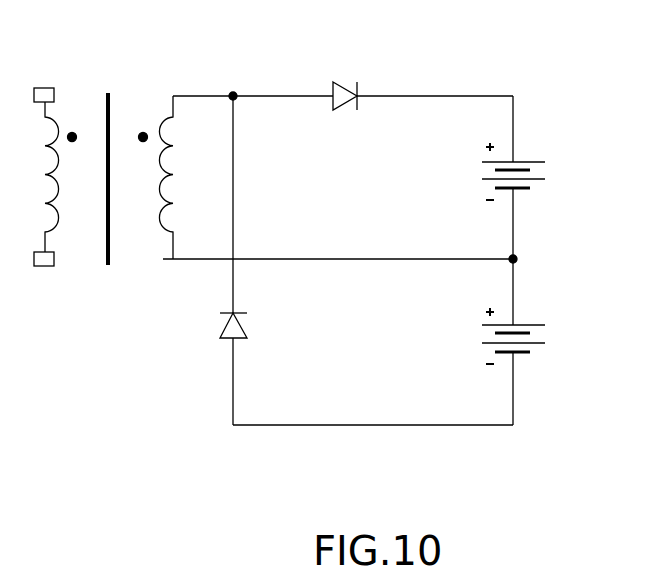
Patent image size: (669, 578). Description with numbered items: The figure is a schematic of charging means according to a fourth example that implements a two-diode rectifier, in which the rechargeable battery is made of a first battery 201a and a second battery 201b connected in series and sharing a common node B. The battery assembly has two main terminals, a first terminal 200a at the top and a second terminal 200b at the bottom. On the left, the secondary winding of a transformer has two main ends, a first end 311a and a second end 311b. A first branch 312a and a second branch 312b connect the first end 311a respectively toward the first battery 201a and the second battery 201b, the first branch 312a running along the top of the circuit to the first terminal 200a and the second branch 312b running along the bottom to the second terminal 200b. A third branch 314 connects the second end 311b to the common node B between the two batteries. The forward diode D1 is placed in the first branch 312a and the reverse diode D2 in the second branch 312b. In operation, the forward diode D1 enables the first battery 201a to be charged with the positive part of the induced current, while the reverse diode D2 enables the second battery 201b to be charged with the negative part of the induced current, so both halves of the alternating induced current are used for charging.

The first end 311a is at (172, 95).
The second end 311b is at (165, 259).
The first branch 312a is at (267, 95).
The second branch 312b is at (378, 425).
The third branch 314 is at (360, 259).
The forward diode D1 is at (343, 92).
The reverse diode D2 is at (220, 328).
The first terminal 200a is at (517, 96).
The second terminal 200b is at (517, 425).
The first battery 201a is at (545, 170).
The second battery 201b is at (545, 343).
The common node B is at (520, 257).